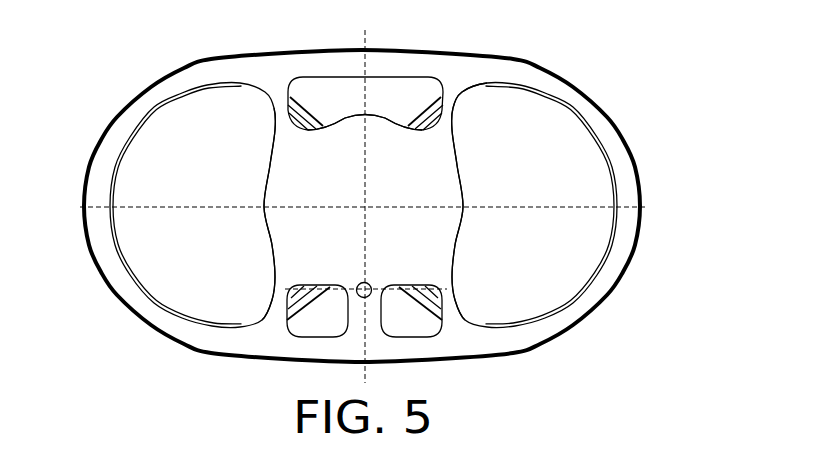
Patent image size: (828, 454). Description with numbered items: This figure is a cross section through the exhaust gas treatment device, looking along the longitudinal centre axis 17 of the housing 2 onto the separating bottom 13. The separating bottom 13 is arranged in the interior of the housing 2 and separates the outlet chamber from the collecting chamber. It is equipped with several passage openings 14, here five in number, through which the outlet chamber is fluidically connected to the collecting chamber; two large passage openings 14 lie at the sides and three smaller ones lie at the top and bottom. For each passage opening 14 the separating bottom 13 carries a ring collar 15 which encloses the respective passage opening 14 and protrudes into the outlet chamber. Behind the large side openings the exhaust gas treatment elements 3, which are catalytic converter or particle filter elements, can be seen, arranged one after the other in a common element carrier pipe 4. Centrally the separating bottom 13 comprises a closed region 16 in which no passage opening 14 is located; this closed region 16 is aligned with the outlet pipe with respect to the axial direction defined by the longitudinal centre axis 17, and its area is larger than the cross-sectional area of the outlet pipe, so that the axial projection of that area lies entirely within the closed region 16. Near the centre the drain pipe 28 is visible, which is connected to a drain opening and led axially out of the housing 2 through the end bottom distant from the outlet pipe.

The housing 2 is at (643, 149).
The exhaust gas treatment element 3 is at (196, 124).
The element carrier pipe 4 is at (307, 104).
The separating bottom 13 is at (457, 84).
The passage opening 14 is at (177, 174).
The ring collar 15 is at (346, 124).
The closed region 16 is at (410, 194).
The longitudinal centre axis 17 is at (362, 210).
The drain pipe 28 is at (372, 285).